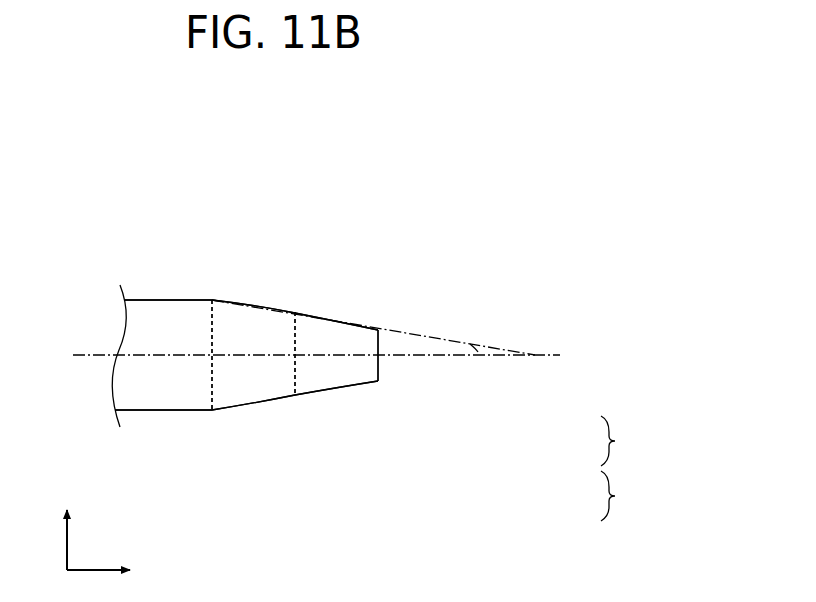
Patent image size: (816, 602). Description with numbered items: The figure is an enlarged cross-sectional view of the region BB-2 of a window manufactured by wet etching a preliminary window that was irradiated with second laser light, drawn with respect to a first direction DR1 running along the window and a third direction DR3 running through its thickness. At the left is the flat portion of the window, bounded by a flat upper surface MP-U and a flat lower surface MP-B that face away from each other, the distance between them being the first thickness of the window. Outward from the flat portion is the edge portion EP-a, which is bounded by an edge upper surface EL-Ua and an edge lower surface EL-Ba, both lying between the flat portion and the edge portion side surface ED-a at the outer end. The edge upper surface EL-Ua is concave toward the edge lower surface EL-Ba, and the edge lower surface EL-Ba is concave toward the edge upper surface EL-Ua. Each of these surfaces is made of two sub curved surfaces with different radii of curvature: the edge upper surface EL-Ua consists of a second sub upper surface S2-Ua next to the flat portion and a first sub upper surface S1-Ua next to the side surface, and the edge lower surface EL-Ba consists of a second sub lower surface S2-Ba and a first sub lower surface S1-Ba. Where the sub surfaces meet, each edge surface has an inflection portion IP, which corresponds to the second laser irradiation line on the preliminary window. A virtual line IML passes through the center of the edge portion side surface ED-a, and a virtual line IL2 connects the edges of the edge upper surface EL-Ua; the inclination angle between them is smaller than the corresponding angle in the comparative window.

The region BB-2 is at (389, 214).
The virtual line IML is at (542, 355).
The virtual line IL2 is at (410, 334).
The flat upper surface MP-U is at (167, 298).
The flat lower surface MP-B is at (167, 412).
The edge portion EP-a is at (218, 313).
The second sub upper surface S2-Ua is at (249, 306).
The first sub upper surface S1-Ua is at (335, 321).
The second sub lower surface S2-Ba is at (248, 403).
The first sub lower surface S1-Ba is at (335, 389).
The inflection portion IP is at (294, 312).
The edge portion side surface ED-a is at (381, 369).
The edge upper surface EL-Ua is at (609, 441).
The edge lower surface EL-Ba is at (609, 496).
The first direction DR1 is at (117, 571).
The third direction DR3 is at (65, 527).